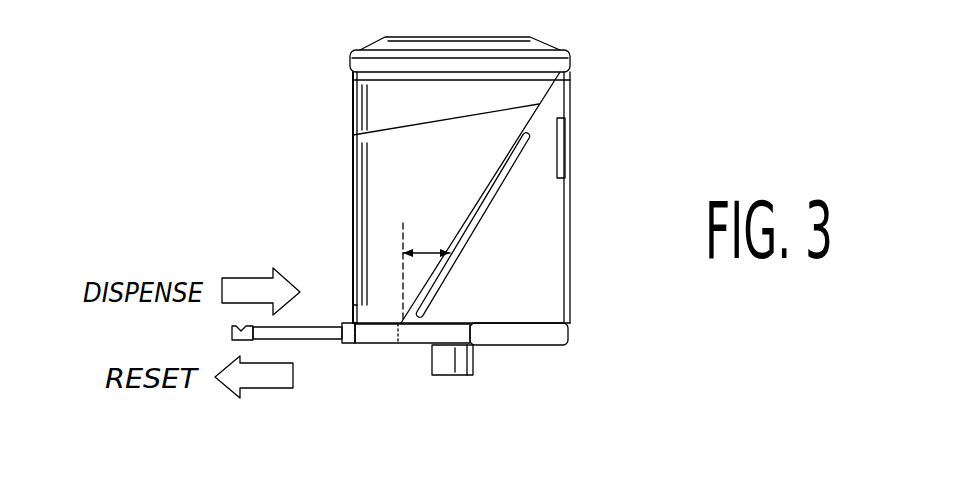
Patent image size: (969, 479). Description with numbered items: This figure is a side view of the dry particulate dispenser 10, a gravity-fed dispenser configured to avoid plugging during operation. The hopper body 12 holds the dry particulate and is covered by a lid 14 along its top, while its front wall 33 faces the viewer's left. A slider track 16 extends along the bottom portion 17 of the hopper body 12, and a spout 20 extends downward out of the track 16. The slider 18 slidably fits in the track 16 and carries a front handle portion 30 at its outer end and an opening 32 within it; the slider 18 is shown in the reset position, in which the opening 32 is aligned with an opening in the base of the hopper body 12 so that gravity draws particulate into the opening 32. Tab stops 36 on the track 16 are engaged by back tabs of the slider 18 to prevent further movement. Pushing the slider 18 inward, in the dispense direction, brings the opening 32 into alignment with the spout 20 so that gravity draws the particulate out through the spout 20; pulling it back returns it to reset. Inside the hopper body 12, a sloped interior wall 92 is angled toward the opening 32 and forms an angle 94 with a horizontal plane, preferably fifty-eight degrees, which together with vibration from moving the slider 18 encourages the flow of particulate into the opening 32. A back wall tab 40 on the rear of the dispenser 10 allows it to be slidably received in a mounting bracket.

The dry particulate dispenser 10 is at (632, 118).
The hopper body 12 is at (348, 137).
The lid 14 is at (560, 40).
The slider track 16 is at (568, 330).
The bottom portion 17 is at (350, 312).
The slider 18 is at (320, 343).
The spout 20 is at (432, 378).
The front handle portion 30 is at (232, 327).
The opening 32 is at (377, 335).
The front wall 33 is at (353, 203).
The tab stops 36 is at (483, 323).
The back wall tab 40 is at (570, 150).
The sloped interior wall 92 is at (495, 175).
The angle 94 is at (427, 252).